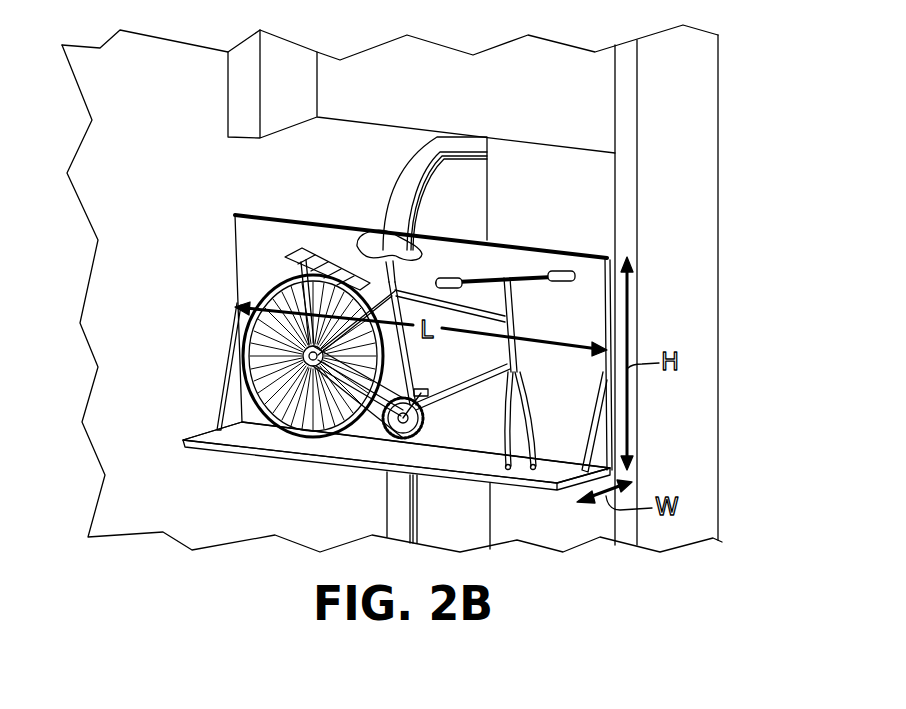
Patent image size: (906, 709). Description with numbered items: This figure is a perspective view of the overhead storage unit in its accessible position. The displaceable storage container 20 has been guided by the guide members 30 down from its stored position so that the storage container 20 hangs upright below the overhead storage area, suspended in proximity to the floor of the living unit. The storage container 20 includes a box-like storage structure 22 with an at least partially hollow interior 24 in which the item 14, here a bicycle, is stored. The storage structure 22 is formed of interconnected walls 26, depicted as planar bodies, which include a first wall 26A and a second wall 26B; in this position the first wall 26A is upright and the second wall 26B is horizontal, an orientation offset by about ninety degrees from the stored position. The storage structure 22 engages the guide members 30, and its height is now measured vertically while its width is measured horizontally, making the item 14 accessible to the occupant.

The item 14 is at (466, 392).
The storage container 20 is at (237, 215).
The storage structure 22 is at (553, 251).
The interior 24 is at (575, 390).
The walls 26 is at (391, 343).
The first wall 26A is at (290, 237).
The second wall 26B is at (220, 448).
The guide members 30 is at (622, 172).